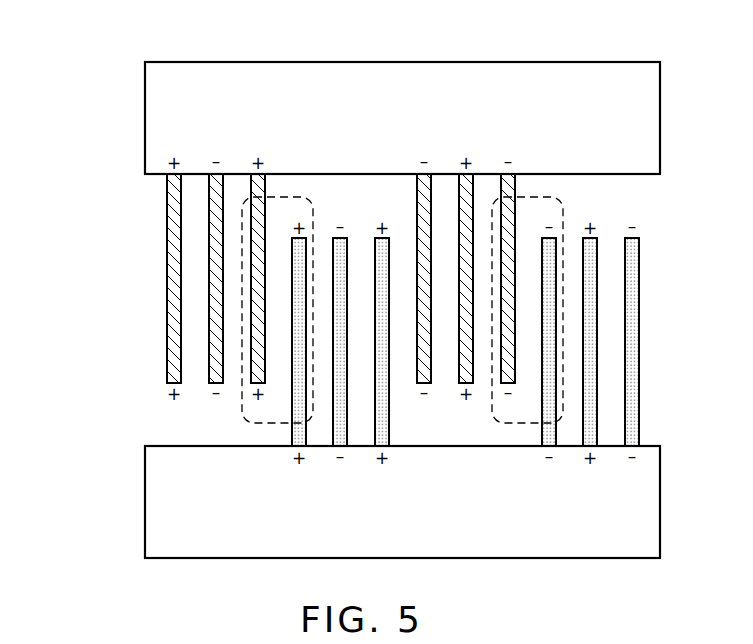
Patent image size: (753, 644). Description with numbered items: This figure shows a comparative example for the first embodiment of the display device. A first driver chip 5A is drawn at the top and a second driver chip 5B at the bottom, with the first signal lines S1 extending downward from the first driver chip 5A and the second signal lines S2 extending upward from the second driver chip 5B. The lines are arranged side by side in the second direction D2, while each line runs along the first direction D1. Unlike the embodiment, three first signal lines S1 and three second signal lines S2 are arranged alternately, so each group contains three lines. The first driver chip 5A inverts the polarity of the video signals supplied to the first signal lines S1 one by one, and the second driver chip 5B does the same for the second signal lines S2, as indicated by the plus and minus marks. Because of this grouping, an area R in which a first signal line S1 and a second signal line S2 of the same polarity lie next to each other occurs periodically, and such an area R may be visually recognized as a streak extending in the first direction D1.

The first driver chip 5A is at (145, 118).
The second driver chip 5B is at (145, 497).
The first signal lines S1 is at (258, 218).
The second signal lines S2 is at (300, 435).
The area R is at (292, 197).
The first direction D1 is at (30, 90).
The second direction D2 is at (84, 63).